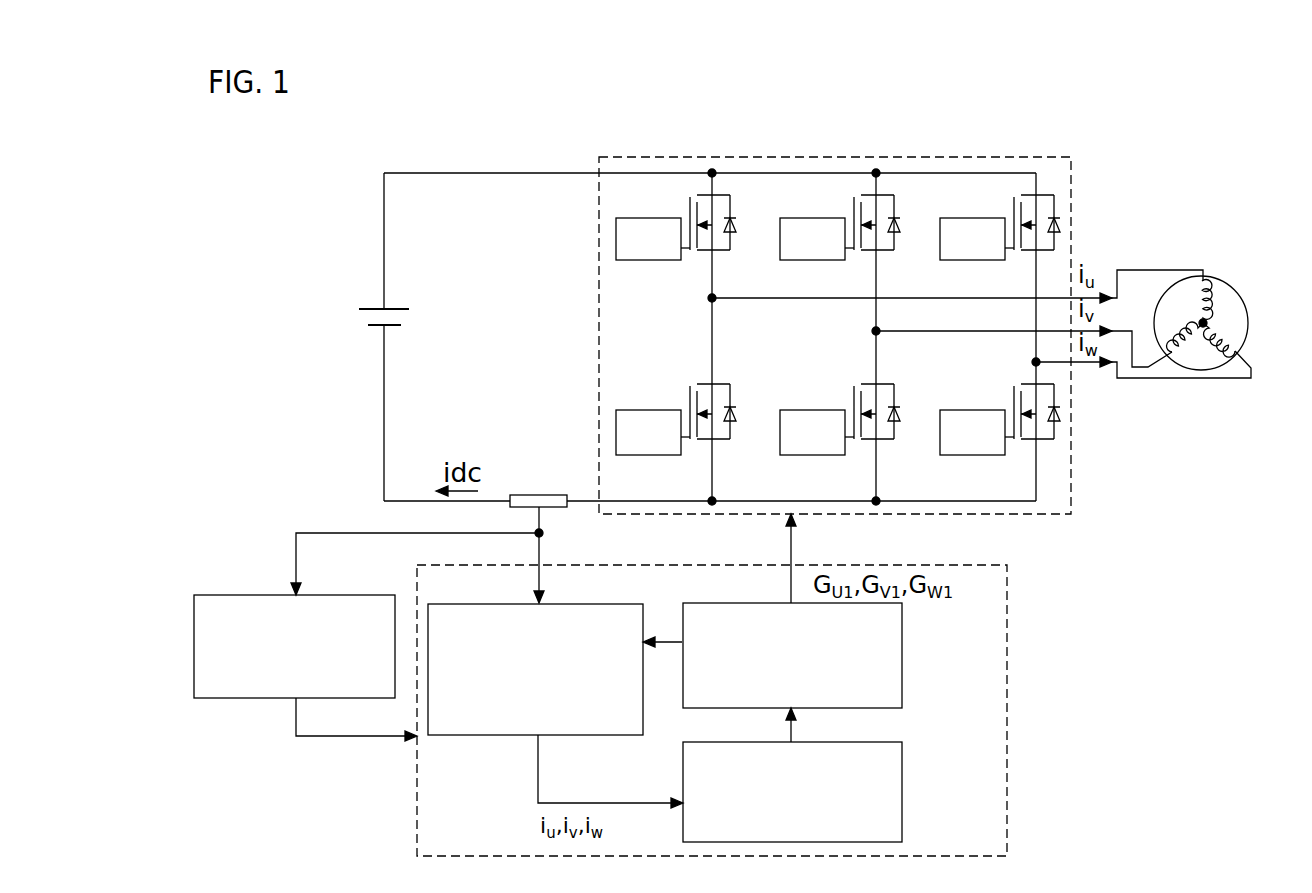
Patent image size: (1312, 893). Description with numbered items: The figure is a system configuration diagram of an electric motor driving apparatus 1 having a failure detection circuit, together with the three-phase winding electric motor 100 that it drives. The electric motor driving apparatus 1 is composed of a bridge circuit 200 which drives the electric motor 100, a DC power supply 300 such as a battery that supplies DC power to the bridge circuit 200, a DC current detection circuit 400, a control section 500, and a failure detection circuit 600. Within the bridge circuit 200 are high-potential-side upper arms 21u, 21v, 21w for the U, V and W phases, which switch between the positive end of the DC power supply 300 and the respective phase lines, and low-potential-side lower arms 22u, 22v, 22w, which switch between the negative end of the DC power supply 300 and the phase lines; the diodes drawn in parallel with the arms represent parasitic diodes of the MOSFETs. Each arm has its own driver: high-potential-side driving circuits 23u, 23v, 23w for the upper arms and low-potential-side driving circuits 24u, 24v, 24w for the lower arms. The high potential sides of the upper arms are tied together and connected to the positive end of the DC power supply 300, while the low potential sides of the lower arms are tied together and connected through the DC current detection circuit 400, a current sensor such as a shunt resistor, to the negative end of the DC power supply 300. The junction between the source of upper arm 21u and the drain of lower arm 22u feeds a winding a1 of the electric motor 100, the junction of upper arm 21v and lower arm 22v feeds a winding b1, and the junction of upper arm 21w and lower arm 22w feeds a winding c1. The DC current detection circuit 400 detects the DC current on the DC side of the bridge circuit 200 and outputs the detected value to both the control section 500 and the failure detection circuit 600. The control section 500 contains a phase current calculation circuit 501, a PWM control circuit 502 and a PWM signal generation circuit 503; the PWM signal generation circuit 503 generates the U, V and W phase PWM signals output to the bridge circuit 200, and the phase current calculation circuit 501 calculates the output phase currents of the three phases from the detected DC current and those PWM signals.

The electric motor driving apparatus 1 is at (1107, 612).
The three-phase winding electric motor 100 is at (1206, 310).
The bridge circuit 200 is at (1013, 157).
The DC power supply 300 is at (405, 305).
The DC current detection circuit 400 is at (533, 493).
The control section 500 is at (1007, 683).
The phase current calculation circuit 501 is at (572, 600).
The PWM control circuit 502 is at (902, 800).
The PWM signal generation circuit 503 is at (902, 640).
The failure detection circuit 600 is at (230, 592).
The upper arm 21u is at (689, 207).
The upper arm 21v is at (853, 207).
The upper arm 21w is at (1013, 207).
The lower arm 22u is at (689, 391).
The lower arm 22v is at (853, 391).
The lower arm 22w is at (1013, 391).
The high-potential-side driving circuit 23u is at (660, 260).
The high-potential-side driving circuit 23v is at (824, 260).
The high-potential-side driving circuit 23w is at (984, 260).
The low-potential-side driving circuit 24u is at (665, 455).
The low-potential-side driving circuit 24v is at (829, 455).
The low-potential-side driving circuit 24w is at (989, 455).
The winding a1 is at (1196, 290).
The winding b1 is at (1182, 352).
The winding c1 is at (1227, 322).